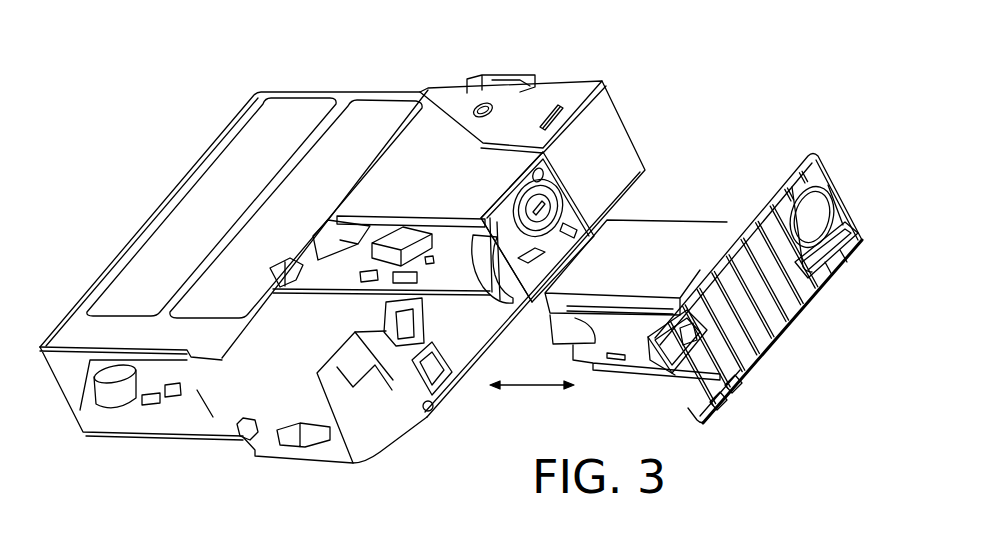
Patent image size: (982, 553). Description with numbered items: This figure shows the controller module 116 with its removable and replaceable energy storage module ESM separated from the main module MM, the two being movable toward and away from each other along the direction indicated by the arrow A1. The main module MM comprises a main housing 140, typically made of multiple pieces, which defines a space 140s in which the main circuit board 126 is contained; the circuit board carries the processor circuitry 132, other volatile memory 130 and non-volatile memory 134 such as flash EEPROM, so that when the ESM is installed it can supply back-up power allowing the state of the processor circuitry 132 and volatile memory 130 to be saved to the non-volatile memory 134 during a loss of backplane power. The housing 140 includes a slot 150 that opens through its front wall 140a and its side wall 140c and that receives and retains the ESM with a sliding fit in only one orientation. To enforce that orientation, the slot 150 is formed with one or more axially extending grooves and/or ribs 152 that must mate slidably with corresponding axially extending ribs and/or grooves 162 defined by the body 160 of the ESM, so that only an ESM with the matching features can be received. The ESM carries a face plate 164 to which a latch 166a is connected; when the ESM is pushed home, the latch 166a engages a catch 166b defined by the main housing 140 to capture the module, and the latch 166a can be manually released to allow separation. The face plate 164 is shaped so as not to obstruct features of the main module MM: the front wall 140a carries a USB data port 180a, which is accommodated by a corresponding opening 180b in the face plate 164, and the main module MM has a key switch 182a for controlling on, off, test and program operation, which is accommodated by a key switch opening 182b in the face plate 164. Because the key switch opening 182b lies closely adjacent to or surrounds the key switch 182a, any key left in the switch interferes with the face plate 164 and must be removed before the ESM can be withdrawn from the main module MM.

The controller module 116 is at (674, 104).
The main module MM is at (564, 66).
The energy storage module ESM is at (731, 207).
The main housing 140 is at (184, 217).
The front wall 140a is at (510, 205).
The side wall 140c is at (370, 163).
The space 140s is at (172, 426).
The main circuit board 126 is at (424, 252).
The volatile memory 130 is at (332, 258).
The processor circuitry 132 is at (323, 280).
The non-volatile memory 134 is at (372, 258).
The slot 150 is at (463, 357).
The mechanical features 152 is at (493, 300).
The body 160 is at (662, 240).
The mechanical features 162 is at (620, 310).
The face plate 164 is at (793, 310).
The latch 166a is at (702, 333).
The catch 166b is at (396, 310).
The USB data port 180a is at (423, 400).
The opening 180b is at (730, 392).
The key switch 182a is at (548, 206).
The key switch opening 182b is at (836, 188).
The arrow A1 is at (528, 386).